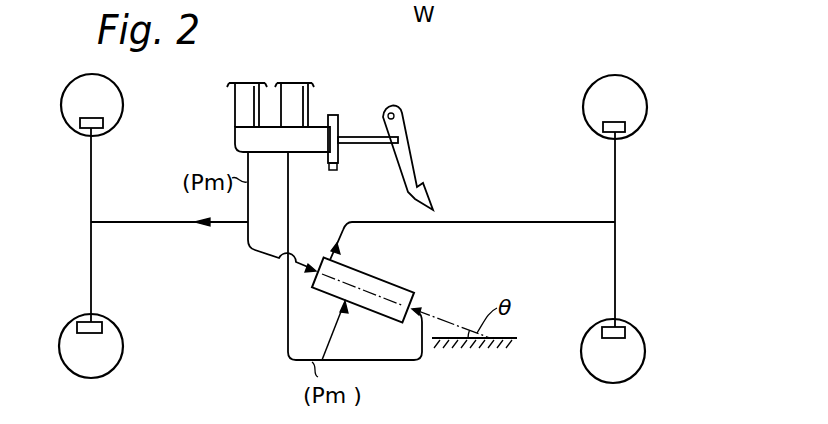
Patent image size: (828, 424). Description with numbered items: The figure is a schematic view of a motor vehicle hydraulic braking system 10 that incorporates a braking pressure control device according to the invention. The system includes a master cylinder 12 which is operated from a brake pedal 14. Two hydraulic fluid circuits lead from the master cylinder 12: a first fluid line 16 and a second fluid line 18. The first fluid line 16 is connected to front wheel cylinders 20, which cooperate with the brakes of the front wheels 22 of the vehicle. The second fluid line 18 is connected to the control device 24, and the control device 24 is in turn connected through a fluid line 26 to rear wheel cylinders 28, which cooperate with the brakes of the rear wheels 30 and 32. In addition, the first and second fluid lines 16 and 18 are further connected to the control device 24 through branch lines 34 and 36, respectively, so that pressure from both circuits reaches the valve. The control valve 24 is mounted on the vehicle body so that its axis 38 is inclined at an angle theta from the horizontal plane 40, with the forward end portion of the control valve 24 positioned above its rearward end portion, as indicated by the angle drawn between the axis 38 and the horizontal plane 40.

The hydraulic braking system 10 is at (259, 74).
The master cylinder 12 is at (318, 124).
The brake pedal 14 is at (412, 160).
The first fluid line 16 is at (152, 220).
The second fluid line 18 is at (288, 342).
The front wheel cylinders 20 is at (104, 123).
The front wheels 22 is at (112, 90).
The control device 24 is at (387, 281).
The fluid line 26 is at (533, 210).
The rear wheel cylinders 28 is at (626, 128).
The rear wheel 30 is at (632, 93).
The rear wheel 32 is at (628, 367).
The branch line 34 is at (255, 250).
The branch line 36 is at (390, 362).
The axis 38 is at (449, 309).
The horizontal plane 40 is at (503, 337).